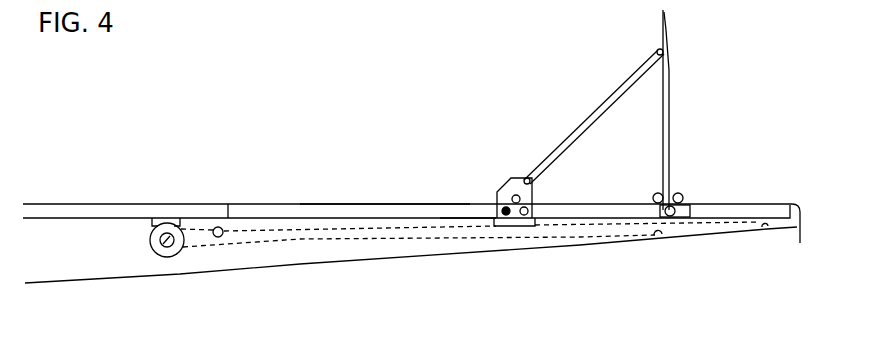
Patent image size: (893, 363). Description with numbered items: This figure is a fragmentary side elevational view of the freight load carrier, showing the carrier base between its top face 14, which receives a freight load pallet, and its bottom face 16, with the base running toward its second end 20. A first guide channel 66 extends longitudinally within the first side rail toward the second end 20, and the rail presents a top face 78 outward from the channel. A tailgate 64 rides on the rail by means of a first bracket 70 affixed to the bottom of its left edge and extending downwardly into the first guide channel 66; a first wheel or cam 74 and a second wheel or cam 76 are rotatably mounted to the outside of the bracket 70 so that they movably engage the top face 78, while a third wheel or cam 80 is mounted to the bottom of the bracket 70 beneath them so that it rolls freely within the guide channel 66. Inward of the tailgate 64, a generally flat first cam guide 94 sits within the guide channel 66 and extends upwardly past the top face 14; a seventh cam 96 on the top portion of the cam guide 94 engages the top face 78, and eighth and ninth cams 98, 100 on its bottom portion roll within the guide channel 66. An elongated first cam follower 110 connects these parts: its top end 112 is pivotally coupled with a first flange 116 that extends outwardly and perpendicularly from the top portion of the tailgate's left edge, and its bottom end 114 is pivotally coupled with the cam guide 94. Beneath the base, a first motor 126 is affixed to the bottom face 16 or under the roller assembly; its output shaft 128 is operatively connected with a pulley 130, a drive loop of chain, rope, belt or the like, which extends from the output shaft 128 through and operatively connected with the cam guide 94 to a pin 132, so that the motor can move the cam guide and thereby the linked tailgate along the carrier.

The top face 14 is at (58, 203).
The bottom face 16 is at (58, 284).
The second end 20 is at (798, 250).
The tailgate 64 is at (670, 108).
The first guide channel 66 is at (465, 204).
The first bracket 70 is at (677, 190).
The first wheel or cam 74 is at (656, 194).
The second wheel or cam 76 is at (690, 199).
The top face of first side rail 78 is at (412, 202).
The third wheel or cam 80 is at (662, 211).
The first cam guide 94 is at (514, 186).
The seventh cam 96 is at (520, 198).
The eighth cam 98 is at (502, 210).
The ninth cam 100 is at (528, 210).
The first cam follower 110 is at (581, 121).
The top end 112 is at (656, 50).
The bottom end 114 is at (528, 177).
The first flange 116 is at (667, 52).
The first motor 126 is at (150, 242).
The output shaft 128 is at (163, 243).
The pulley 130 is at (252, 237).
The pin 132 is at (766, 230).